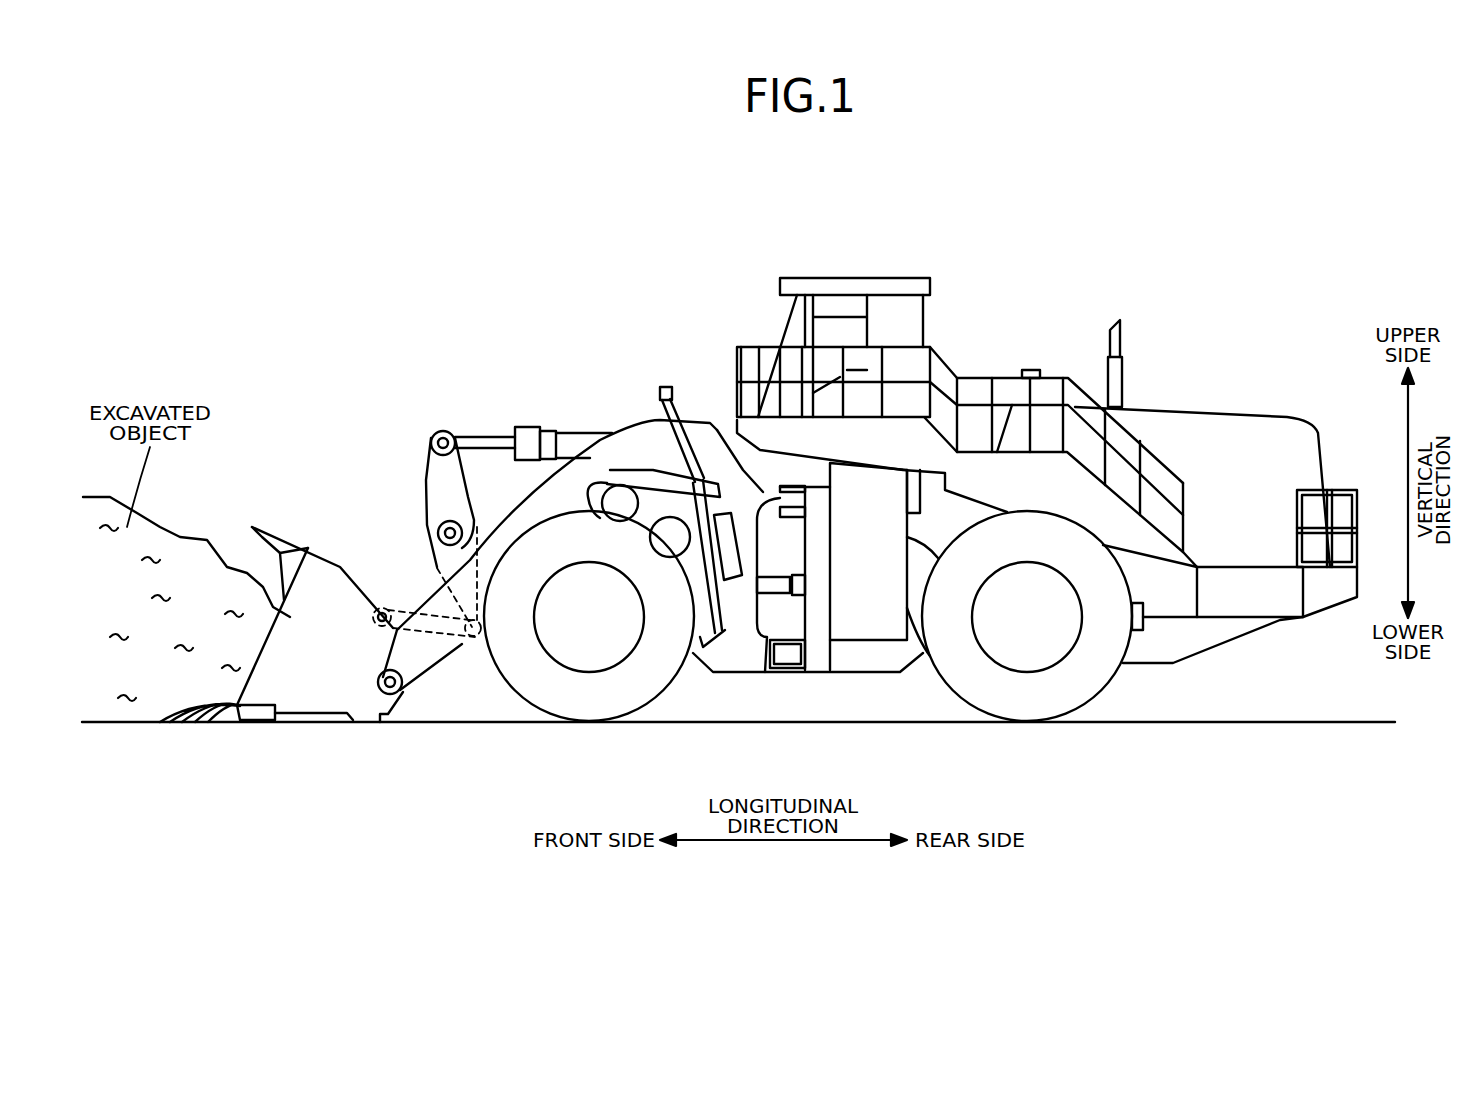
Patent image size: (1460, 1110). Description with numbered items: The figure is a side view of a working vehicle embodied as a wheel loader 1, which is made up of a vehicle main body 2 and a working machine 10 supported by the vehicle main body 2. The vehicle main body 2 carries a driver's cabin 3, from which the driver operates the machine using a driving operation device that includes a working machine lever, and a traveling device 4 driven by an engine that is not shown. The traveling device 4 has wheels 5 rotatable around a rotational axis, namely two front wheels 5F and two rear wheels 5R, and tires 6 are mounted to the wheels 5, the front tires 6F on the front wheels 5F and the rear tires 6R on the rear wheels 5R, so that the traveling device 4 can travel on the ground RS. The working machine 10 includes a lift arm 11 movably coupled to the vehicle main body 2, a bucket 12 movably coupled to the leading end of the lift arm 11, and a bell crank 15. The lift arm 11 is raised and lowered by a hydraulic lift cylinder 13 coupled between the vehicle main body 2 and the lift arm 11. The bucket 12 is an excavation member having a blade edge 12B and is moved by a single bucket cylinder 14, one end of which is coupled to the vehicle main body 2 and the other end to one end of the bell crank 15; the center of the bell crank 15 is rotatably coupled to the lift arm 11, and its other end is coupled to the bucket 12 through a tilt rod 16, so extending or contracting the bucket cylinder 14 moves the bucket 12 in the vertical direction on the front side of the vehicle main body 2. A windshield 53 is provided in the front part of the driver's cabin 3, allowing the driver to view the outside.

The wheel loader 1 is at (1104, 236).
The vehicle main body 2 is at (1140, 406).
The driver's cabin 3 is at (838, 332).
The traveling device 4 is at (846, 647).
The wheels 5 is at (816, 673).
The front wheels 5F is at (614, 650).
The rear wheels 5R is at (1058, 650).
The tires 6 is at (808, 647).
The front tires 6F is at (505, 705).
The rear tires 6R is at (955, 705).
The working machine 10 is at (293, 490).
The lift arm 11 is at (432, 593).
The bucket 12 is at (258, 641).
The blade edge 12B is at (160, 722).
The lift cylinder 13 is at (713, 630).
The bucket cylinder 14 is at (568, 443).
The bell crank 15 is at (440, 495).
The tilt rod 16 is at (397, 608).
The windshield 53 is at (780, 325).
The ground RS is at (1378, 720).